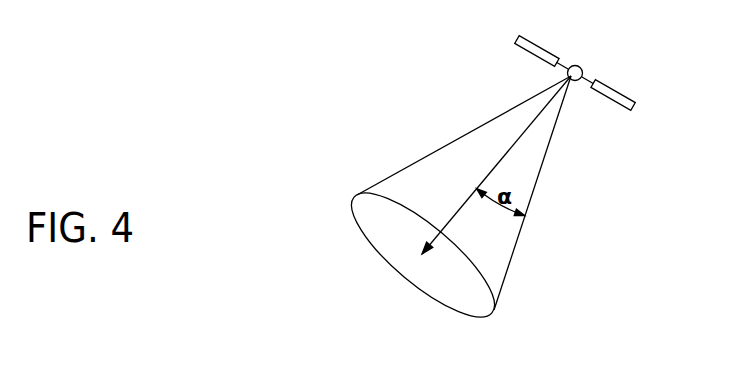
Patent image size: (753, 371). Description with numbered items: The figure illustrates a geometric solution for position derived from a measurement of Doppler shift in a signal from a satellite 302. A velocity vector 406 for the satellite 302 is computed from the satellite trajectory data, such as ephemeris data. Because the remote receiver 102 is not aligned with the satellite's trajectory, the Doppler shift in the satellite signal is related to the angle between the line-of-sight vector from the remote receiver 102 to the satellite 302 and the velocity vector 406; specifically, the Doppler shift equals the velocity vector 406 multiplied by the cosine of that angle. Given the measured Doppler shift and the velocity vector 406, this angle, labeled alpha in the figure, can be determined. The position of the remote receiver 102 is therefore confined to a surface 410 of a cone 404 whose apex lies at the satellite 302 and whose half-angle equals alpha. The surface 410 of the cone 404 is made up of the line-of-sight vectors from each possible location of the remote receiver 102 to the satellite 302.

The satellite 302 is at (576, 65).
The cone 404 is at (428, 173).
The velocity vector 406 is at (522, 133).
The surface 410 is at (550, 142).
The remote receiver 102 is at (493, 299).